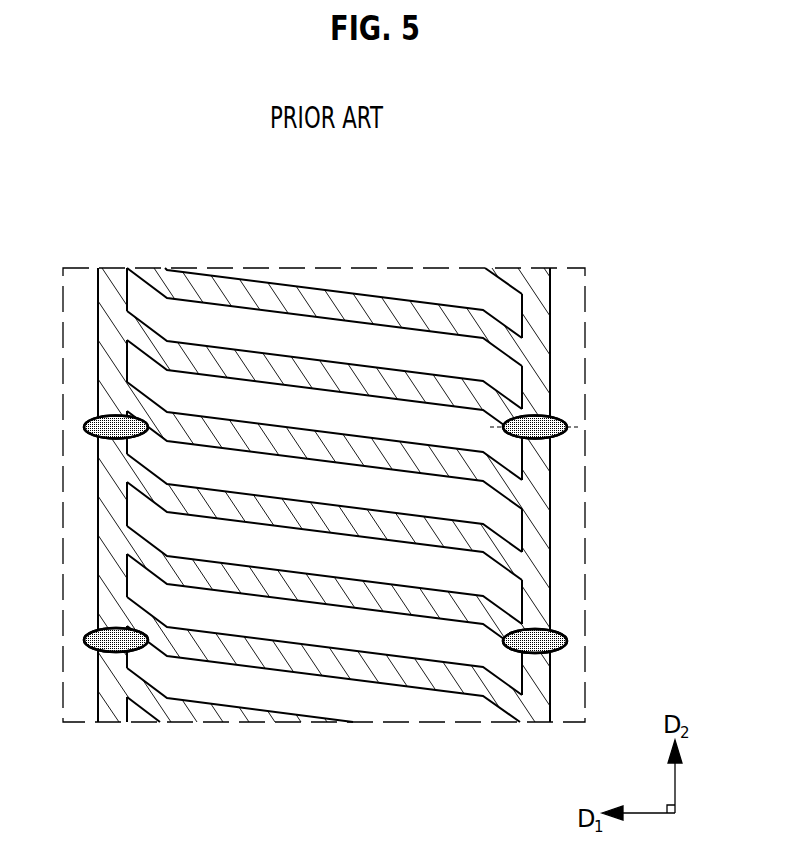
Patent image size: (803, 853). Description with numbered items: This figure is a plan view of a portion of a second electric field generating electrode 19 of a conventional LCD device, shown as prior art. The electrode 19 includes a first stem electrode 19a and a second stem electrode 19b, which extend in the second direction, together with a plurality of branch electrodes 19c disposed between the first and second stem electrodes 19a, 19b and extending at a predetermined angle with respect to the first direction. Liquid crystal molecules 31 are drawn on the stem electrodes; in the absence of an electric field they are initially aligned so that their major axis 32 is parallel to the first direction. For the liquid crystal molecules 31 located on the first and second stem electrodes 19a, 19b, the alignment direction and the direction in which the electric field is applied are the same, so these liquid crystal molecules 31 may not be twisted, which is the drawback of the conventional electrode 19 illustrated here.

The second electric field generating electrode 19 is at (535, 200).
The first stem electrode 19a is at (537, 285).
The second stem electrode 19b is at (115, 288).
The branch electrodes 19c is at (330, 302).
The liquid crystal molecules 31 is at (553, 415).
The major axis 32 is at (570, 430).